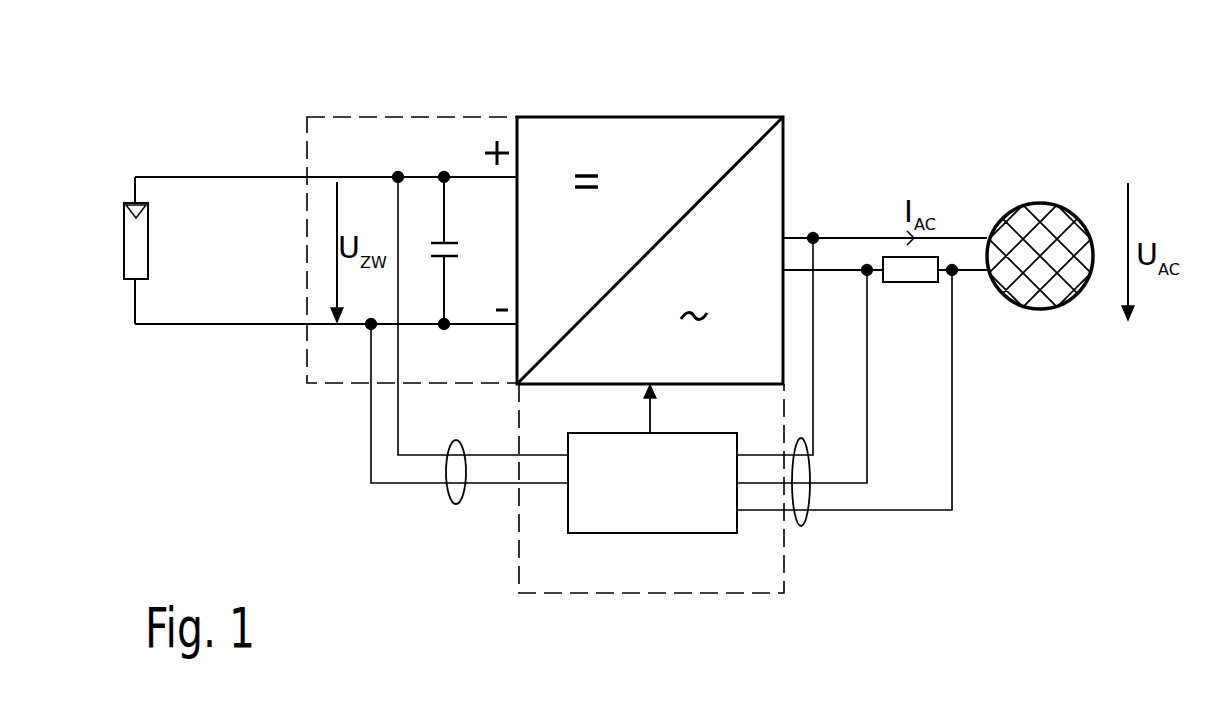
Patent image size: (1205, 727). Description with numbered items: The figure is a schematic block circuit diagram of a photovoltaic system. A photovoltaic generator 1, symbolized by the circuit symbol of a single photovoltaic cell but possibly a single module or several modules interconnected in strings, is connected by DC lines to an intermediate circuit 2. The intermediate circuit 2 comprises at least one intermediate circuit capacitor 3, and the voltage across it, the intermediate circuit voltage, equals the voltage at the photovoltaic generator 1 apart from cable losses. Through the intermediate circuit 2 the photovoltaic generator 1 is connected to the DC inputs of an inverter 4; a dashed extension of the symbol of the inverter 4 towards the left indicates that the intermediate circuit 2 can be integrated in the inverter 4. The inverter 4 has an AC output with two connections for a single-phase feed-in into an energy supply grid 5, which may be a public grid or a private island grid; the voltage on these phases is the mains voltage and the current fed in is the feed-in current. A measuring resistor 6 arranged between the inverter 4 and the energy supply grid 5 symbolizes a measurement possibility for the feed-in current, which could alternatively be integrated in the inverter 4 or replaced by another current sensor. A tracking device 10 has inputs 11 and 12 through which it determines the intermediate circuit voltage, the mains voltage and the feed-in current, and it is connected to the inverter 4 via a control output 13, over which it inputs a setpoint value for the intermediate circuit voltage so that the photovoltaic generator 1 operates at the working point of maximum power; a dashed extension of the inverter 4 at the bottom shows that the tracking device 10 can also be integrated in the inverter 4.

The photovoltaic generator 1 is at (124, 249).
The intermediate circuit 2 is at (452, 143).
The intermediate circuit capacitor 3 is at (449, 257).
The inverter 4 is at (648, 117).
The energy supply grid 5 is at (1033, 203).
The measuring resistor 6 is at (920, 283).
The tracking device 10 is at (643, 535).
The input 11 is at (447, 495).
The input 12 is at (808, 517).
The control output 13 is at (650, 420).